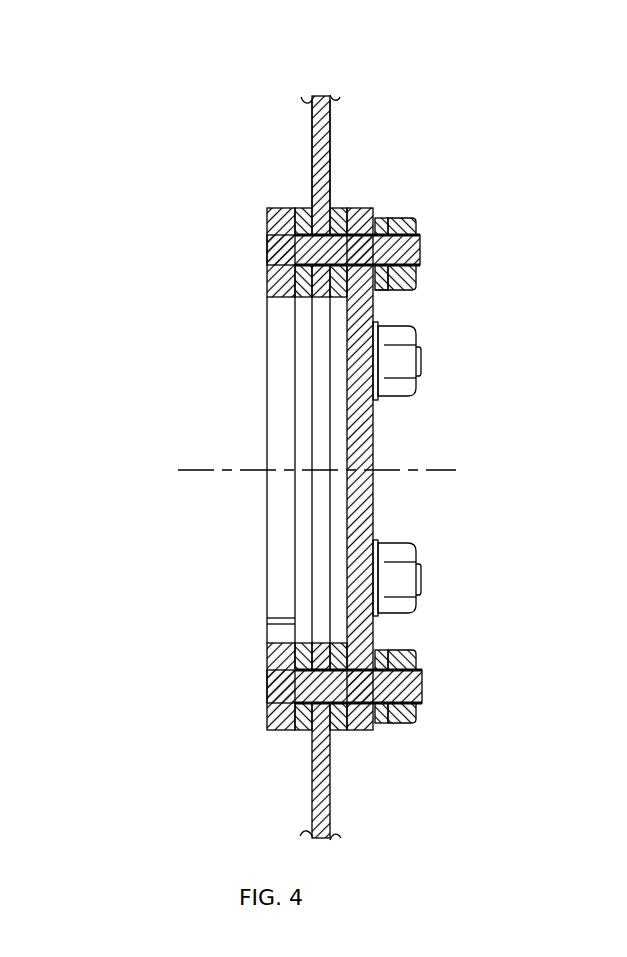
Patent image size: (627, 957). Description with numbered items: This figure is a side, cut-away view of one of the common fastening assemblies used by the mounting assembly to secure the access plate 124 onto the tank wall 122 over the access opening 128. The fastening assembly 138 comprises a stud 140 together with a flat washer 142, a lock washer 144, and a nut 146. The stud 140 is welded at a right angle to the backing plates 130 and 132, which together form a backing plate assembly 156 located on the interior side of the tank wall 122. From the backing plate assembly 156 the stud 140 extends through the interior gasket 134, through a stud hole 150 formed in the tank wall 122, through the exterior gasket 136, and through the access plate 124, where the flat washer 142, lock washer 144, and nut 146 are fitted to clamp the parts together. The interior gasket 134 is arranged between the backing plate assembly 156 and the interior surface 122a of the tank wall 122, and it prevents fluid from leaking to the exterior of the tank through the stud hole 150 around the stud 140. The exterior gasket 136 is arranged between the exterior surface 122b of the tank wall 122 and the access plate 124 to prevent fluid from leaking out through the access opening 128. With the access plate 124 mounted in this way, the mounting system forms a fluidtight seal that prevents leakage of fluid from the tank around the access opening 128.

The tank wall 122 is at (330, 160).
The interior surface 122a is at (312, 160).
The exterior surface 122b is at (330, 133).
The access plate 124 is at (367, 510).
The access opening 128 is at (320, 512).
The first backing plate 130 is at (280, 418).
The second backing plate 132 is at (273, 731).
The interior gasket 134 is at (300, 731).
The exterior gasket 136 is at (333, 733).
The fastening assembly 138 is at (412, 292).
The stud 140 is at (420, 248).
The flat washer 142 is at (377, 210).
The lock washer 144 is at (411, 216).
The nut 146 is at (415, 218).
The stud hole 150 is at (312, 207).
The backing plate assembly 156 is at (258, 621).